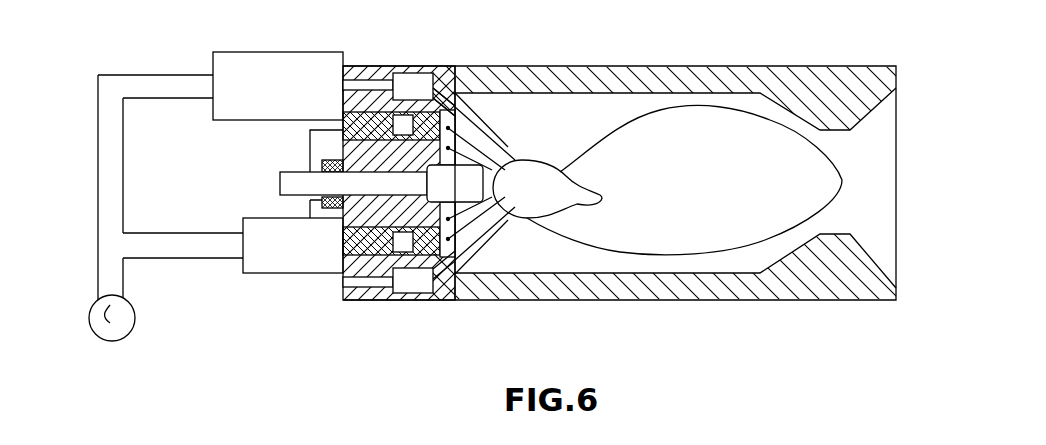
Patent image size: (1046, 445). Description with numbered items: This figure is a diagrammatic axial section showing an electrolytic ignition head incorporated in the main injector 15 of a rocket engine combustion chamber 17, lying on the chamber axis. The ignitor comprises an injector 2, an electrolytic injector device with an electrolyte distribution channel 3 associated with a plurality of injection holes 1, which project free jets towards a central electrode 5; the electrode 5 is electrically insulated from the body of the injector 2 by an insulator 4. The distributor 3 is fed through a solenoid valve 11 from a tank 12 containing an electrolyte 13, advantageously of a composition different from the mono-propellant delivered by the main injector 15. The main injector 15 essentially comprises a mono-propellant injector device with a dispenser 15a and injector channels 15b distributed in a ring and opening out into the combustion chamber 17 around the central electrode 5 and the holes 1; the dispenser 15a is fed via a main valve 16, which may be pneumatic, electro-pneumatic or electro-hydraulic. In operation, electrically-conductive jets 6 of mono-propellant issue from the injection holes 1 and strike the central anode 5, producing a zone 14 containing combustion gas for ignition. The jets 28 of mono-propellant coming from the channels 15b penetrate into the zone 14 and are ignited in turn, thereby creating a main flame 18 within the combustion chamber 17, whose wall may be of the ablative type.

The injection hole 1 is at (414, 284).
The injector 2 is at (362, 97).
The electrolyte distribution channel 3 is at (412, 280).
The insulator 4 is at (417, 201).
The central electrode 5 is at (290, 182).
The electrically-conductive jets 6 is at (473, 222).
The solenoid valve 11 is at (282, 252).
The tank 12 is at (133, 330).
The electrolyte 13 is at (108, 323).
The zone 14 is at (563, 177).
The main injector 15 is at (449, 302).
The dispenser 15a is at (405, 83).
The injector channels 15b is at (443, 74).
The main valve 16 is at (270, 63).
The combustion chamber 17 is at (632, 292).
The main flame 18 is at (698, 143).
The jets of mono-propellant 28 is at (468, 142).